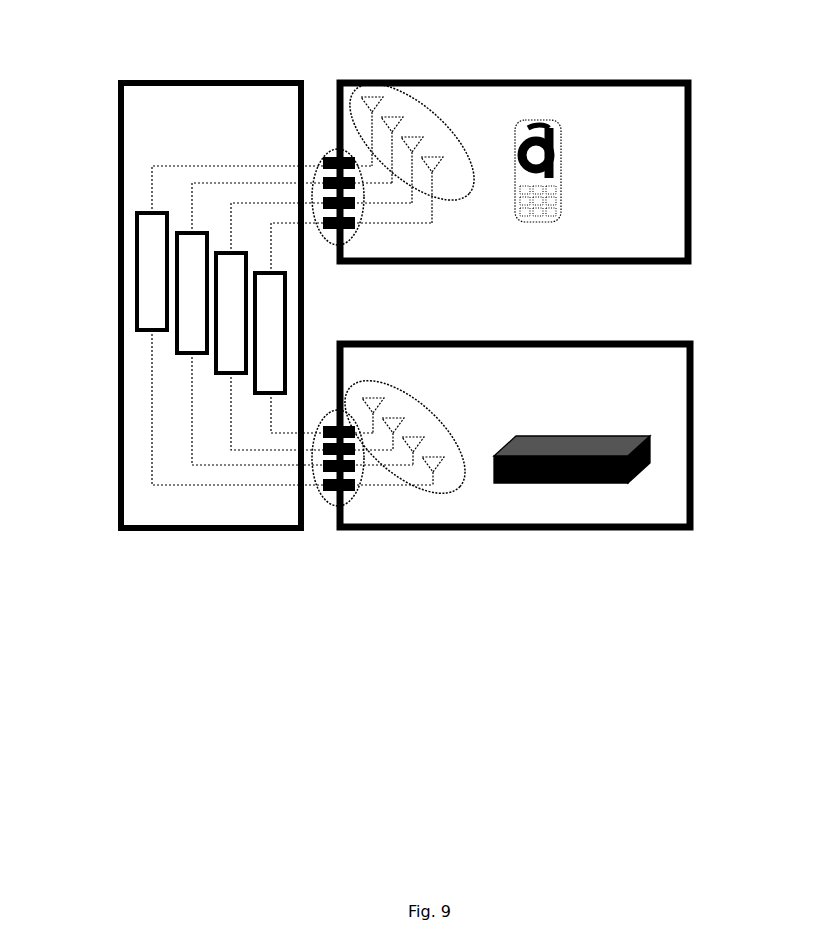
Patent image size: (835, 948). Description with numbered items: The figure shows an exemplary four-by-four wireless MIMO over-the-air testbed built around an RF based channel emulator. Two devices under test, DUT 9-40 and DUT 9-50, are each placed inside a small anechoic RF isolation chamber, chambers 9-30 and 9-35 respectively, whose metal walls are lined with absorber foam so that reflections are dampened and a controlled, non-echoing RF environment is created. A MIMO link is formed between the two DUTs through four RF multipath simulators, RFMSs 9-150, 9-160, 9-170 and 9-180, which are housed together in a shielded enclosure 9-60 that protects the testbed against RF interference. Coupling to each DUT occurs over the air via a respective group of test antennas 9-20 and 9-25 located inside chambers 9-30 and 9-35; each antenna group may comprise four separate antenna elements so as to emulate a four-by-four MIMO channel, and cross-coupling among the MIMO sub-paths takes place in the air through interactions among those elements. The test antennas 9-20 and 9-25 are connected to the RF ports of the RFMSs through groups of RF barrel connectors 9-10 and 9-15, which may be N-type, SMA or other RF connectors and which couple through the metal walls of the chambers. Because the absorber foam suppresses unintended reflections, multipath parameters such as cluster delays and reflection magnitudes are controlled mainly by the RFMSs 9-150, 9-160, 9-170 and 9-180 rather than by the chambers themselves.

The group of RF barrel connectors 10 is at (333, 508).
The group of RF barrel connectors 15 is at (330, 150).
The group of test antennas 20 is at (460, 490).
The group of test antennas 25 is at (385, 82).
The anechoic RF isolation chamber 30 is at (610, 530).
The anechoic RF isolation chamber 35 is at (500, 80).
The DUT 40 is at (610, 436).
The DUT 50 is at (556, 173).
The shielded enclosure 60 is at (182, 530).
The RFMS 150 is at (137, 308).
The RFMS 160 is at (178, 347).
The RFMS 170 is at (216, 365).
The RFMS 180 is at (255, 388).